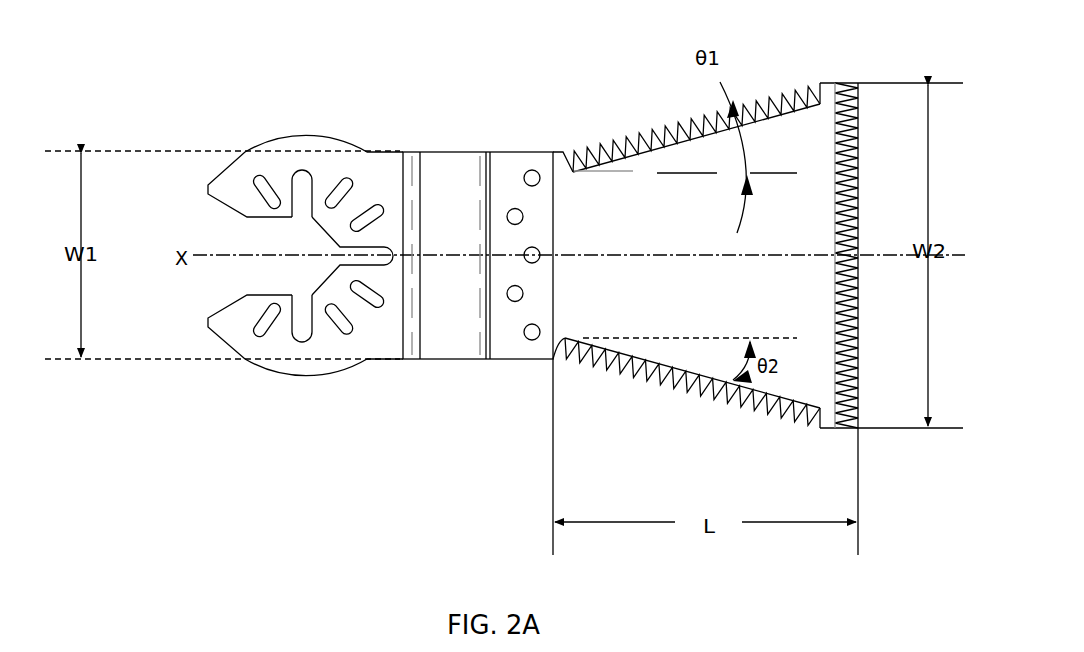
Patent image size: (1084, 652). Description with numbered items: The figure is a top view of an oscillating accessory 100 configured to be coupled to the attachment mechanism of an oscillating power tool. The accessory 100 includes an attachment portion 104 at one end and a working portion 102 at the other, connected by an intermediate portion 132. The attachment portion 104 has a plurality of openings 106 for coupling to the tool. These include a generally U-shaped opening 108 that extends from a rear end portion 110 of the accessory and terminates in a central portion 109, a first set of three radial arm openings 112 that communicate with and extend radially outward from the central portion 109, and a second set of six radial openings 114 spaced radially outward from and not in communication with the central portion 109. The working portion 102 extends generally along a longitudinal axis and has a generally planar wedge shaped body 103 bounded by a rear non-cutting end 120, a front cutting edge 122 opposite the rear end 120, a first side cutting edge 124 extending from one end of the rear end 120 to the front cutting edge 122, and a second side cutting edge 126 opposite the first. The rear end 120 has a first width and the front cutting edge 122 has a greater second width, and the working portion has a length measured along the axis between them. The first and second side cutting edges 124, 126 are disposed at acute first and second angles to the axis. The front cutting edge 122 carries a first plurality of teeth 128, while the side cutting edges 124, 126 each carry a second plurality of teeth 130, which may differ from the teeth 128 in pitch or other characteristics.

The oscillating accessory 100 is at (557, 92).
The working portion 102 is at (723, 318).
The wedge shaped body 103 is at (683, 312).
The attachment portion 104 is at (303, 379).
The openings 106 is at (323, 160).
The U-shaped opening 108 is at (252, 272).
The central portion 109 is at (318, 283).
The rear end portion 110 is at (258, 237).
The radial arm openings 112 is at (299, 166).
The radial openings 114 is at (348, 178).
The rear non-cutting end 120 is at (553, 363).
The front cutting edge 122 is at (860, 188).
The first side cutting edge 124 is at (783, 96).
The second side cutting edge 126 is at (812, 428).
The first plurality of teeth 128 is at (852, 388).
The second plurality of teeth 130 is at (622, 141).
The intermediate portion 132 is at (457, 346).